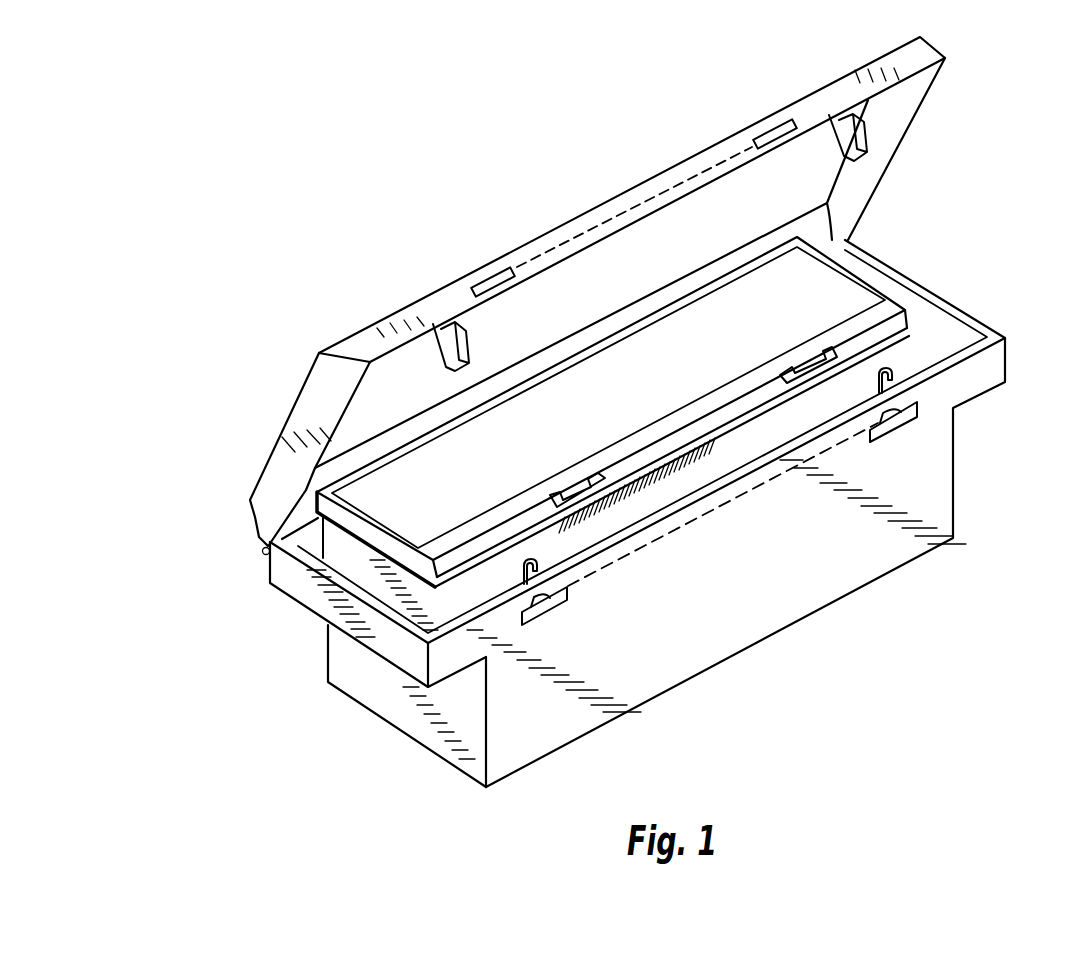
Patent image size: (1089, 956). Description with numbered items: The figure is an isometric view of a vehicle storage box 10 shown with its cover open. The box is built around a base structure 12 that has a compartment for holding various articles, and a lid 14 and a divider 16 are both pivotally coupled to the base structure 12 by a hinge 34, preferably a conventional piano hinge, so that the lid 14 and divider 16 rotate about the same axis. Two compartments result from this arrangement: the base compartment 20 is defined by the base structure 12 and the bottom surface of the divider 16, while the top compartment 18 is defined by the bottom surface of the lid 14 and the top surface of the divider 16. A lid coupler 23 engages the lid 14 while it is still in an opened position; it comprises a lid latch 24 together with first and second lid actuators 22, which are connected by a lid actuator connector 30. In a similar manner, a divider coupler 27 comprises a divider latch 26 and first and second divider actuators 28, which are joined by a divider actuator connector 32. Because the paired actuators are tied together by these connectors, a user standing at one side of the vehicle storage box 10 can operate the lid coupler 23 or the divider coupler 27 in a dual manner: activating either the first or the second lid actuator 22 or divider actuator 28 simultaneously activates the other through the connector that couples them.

The vehicle storage box 10 is at (188, 140).
The base structure 12 is at (897, 550).
The lid 14 is at (555, 306).
The divider 16 is at (647, 407).
The top compartment 18 is at (713, 241).
The base compartment 20 is at (735, 463).
The lid actuator 22 is at (545, 606).
The lid coupler 23 is at (912, 163).
The lid latch 24 is at (445, 340).
The divider latch 26 is at (785, 372).
The divider coupler 27 is at (500, 328).
The divider actuator 28 is at (493, 278).
The lid actuator connector 30 is at (648, 548).
The divider actuator connector 32 is at (640, 205).
The hinge 34 is at (258, 553).